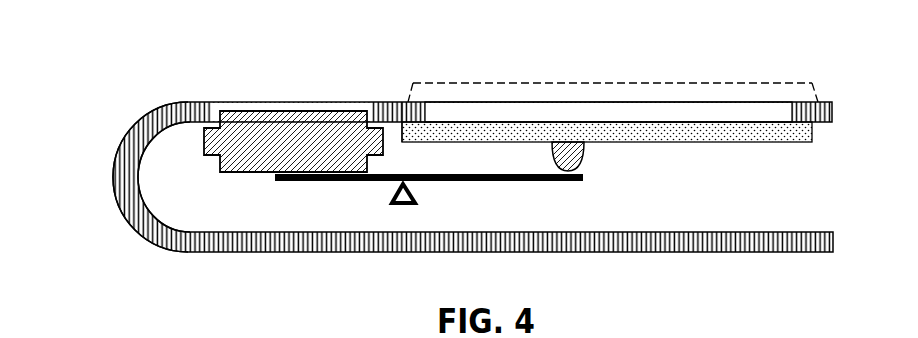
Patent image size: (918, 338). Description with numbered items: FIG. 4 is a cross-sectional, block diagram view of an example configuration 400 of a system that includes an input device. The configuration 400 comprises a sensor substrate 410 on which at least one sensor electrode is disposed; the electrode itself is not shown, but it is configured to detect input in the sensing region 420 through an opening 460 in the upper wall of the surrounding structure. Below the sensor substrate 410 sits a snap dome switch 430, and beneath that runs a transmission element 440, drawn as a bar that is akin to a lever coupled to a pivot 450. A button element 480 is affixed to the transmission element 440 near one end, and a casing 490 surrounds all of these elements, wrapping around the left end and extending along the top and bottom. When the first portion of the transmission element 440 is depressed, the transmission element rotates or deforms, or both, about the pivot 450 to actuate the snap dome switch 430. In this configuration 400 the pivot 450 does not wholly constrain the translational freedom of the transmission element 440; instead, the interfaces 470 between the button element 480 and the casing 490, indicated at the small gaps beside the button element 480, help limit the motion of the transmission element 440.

The example configuration 400 is at (120, 100).
The sensor substrate 410 is at (775, 152).
The sensing region 420 is at (582, 93).
The snap dome switch 430 is at (590, 163).
The transmission element 440 is at (542, 192).
The pivot 450 is at (387, 188).
The opening 460 is at (693, 113).
The interfaces 470 is at (385, 130).
The button element 480 is at (303, 112).
The casing 490 is at (173, 100).